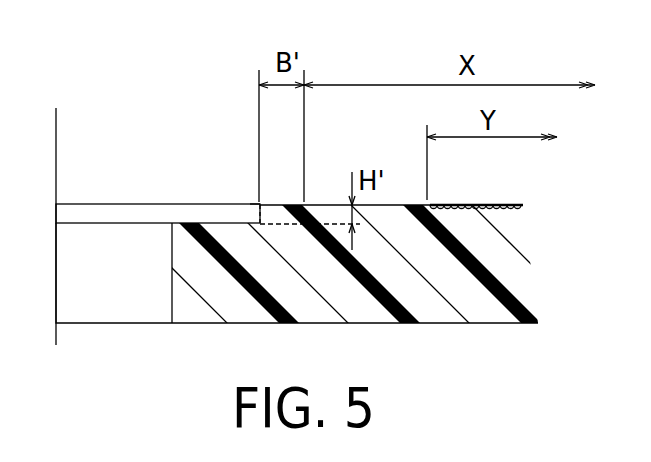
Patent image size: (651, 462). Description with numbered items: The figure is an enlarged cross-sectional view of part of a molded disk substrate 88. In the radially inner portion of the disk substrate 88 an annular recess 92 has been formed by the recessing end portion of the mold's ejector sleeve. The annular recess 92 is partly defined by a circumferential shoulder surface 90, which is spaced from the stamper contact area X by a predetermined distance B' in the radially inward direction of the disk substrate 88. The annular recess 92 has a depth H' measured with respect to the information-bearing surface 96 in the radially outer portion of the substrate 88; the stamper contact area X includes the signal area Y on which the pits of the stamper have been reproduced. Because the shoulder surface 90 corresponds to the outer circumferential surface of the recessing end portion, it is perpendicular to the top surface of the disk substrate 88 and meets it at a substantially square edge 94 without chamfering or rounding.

The disk substrate 88 is at (453, 360).
The circumferential shoulder surface 90 is at (258, 216).
The annular recess 92 is at (205, 223).
The square edge 94 is at (258, 203).
The information-bearing surface 96 is at (397, 204).